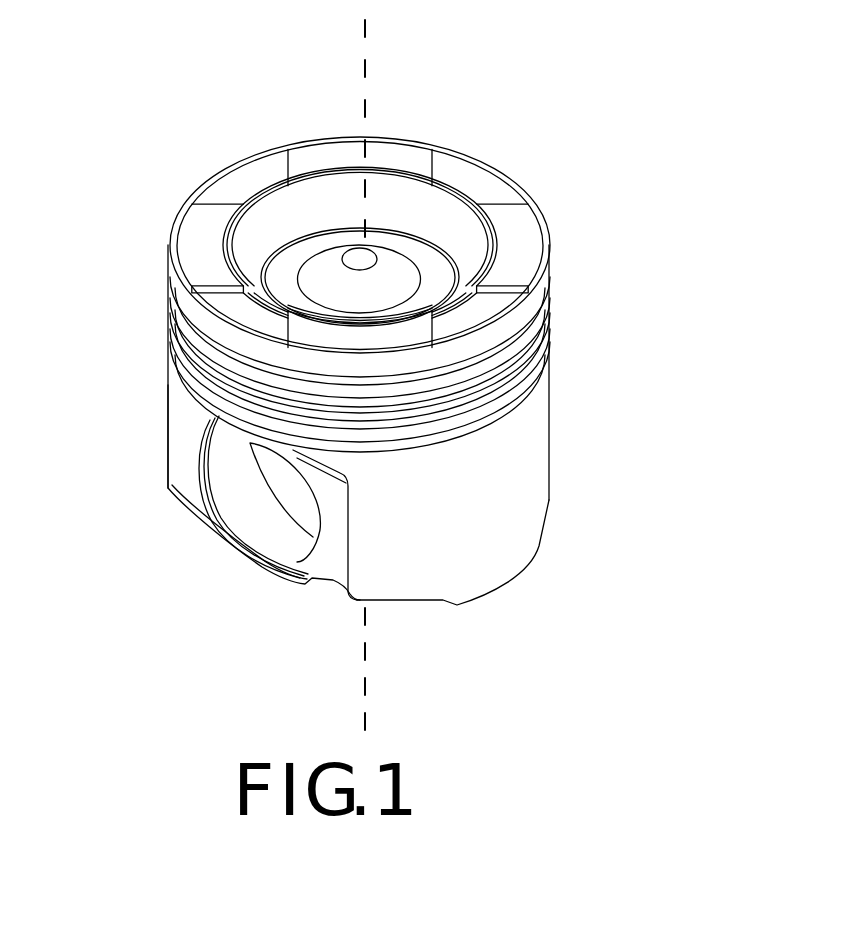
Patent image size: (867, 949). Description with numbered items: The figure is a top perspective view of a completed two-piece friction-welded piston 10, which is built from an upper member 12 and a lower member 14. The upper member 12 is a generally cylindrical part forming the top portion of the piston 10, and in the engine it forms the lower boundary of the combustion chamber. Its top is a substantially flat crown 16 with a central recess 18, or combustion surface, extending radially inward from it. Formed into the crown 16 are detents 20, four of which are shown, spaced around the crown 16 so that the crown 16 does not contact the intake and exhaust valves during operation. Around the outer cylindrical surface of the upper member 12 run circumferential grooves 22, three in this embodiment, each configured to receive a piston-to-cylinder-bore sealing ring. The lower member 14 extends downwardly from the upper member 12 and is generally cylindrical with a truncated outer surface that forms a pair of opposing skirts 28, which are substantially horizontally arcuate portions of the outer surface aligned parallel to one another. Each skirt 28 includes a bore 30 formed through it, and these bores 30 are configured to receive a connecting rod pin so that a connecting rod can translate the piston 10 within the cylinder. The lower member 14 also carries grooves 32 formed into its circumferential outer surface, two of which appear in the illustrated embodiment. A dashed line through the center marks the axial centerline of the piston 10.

The two-piece friction-welded piston 10 is at (626, 110).
The upper member 12 is at (403, 155).
The lower member 14 is at (534, 474).
The crown 16 is at (528, 227).
The central recess 18 is at (339, 258).
The detent 20 is at (235, 187).
The circumferential groove 22 is at (545, 315).
The skirt 28 is at (187, 470).
The bore 30 is at (288, 497).
The groove 32 is at (523, 370).